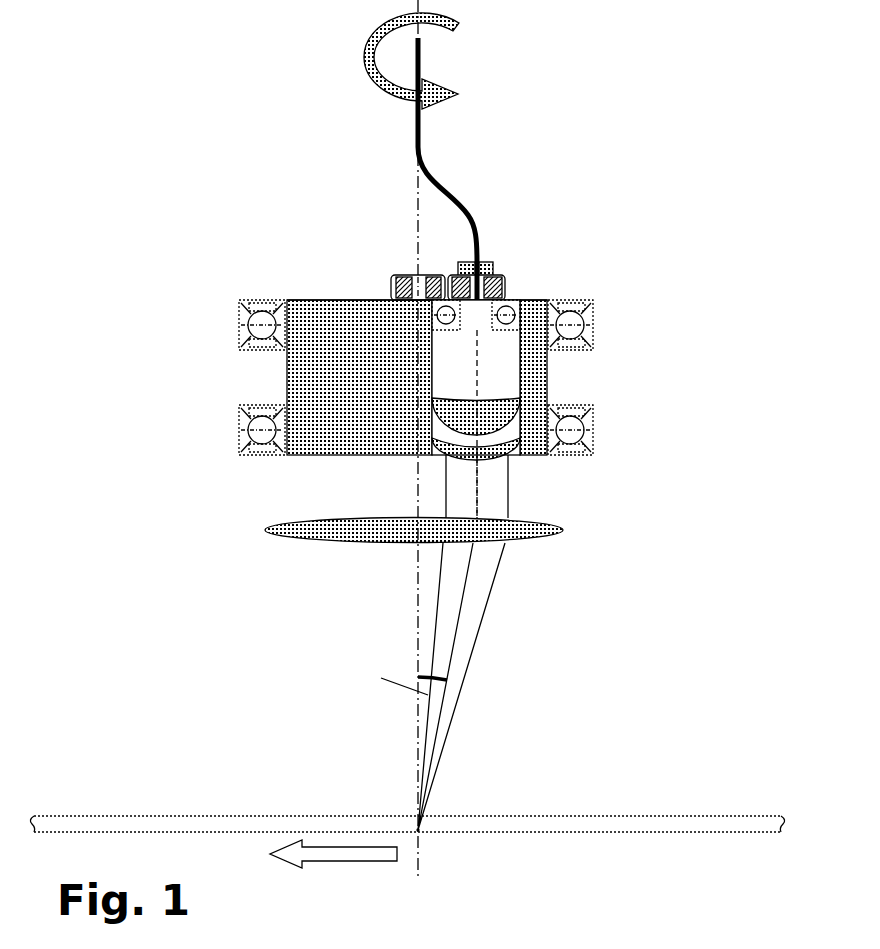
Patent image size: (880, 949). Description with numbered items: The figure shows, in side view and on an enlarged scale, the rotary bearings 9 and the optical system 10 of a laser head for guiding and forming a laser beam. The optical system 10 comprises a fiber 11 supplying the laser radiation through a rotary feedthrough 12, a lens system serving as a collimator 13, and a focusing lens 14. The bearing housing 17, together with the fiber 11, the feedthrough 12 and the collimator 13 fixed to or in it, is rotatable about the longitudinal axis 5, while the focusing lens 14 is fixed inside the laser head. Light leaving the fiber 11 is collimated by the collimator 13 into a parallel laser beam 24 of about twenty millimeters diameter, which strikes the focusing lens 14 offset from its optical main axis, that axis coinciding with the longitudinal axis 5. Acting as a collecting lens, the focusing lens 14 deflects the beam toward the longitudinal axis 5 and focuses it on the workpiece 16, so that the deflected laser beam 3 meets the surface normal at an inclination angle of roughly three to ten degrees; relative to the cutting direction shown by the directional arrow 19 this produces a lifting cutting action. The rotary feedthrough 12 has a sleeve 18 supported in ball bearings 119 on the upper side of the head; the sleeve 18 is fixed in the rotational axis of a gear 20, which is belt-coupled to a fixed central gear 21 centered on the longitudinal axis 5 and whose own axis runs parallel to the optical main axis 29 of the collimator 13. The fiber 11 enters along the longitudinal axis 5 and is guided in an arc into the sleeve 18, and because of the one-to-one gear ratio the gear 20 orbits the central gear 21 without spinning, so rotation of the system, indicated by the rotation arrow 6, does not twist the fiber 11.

The deflected laser beam 3 is at (449, 662).
The longitudinal axis 5 is at (421, 864).
The direction of rotation 6 is at (381, 34).
The rotary bearings 9 is at (246, 312).
The optical system 10 is at (557, 565).
The fiber 11 is at (442, 165).
The rotary feedthrough 12 is at (527, 258).
The collimator 13 is at (497, 452).
The focusing lens 14 is at (343, 532).
The workpiece 16 is at (605, 822).
The bearing housing 17 is at (332, 340).
The sleeve 18 is at (487, 260).
The directional arrow 19 is at (333, 876).
The gear 20 is at (503, 272).
The central gear 21 is at (395, 275).
The parallel laser beam 24 is at (478, 502).
The optical main axis of the collimator 29 is at (478, 372).
The ball bearings 119 is at (509, 308).